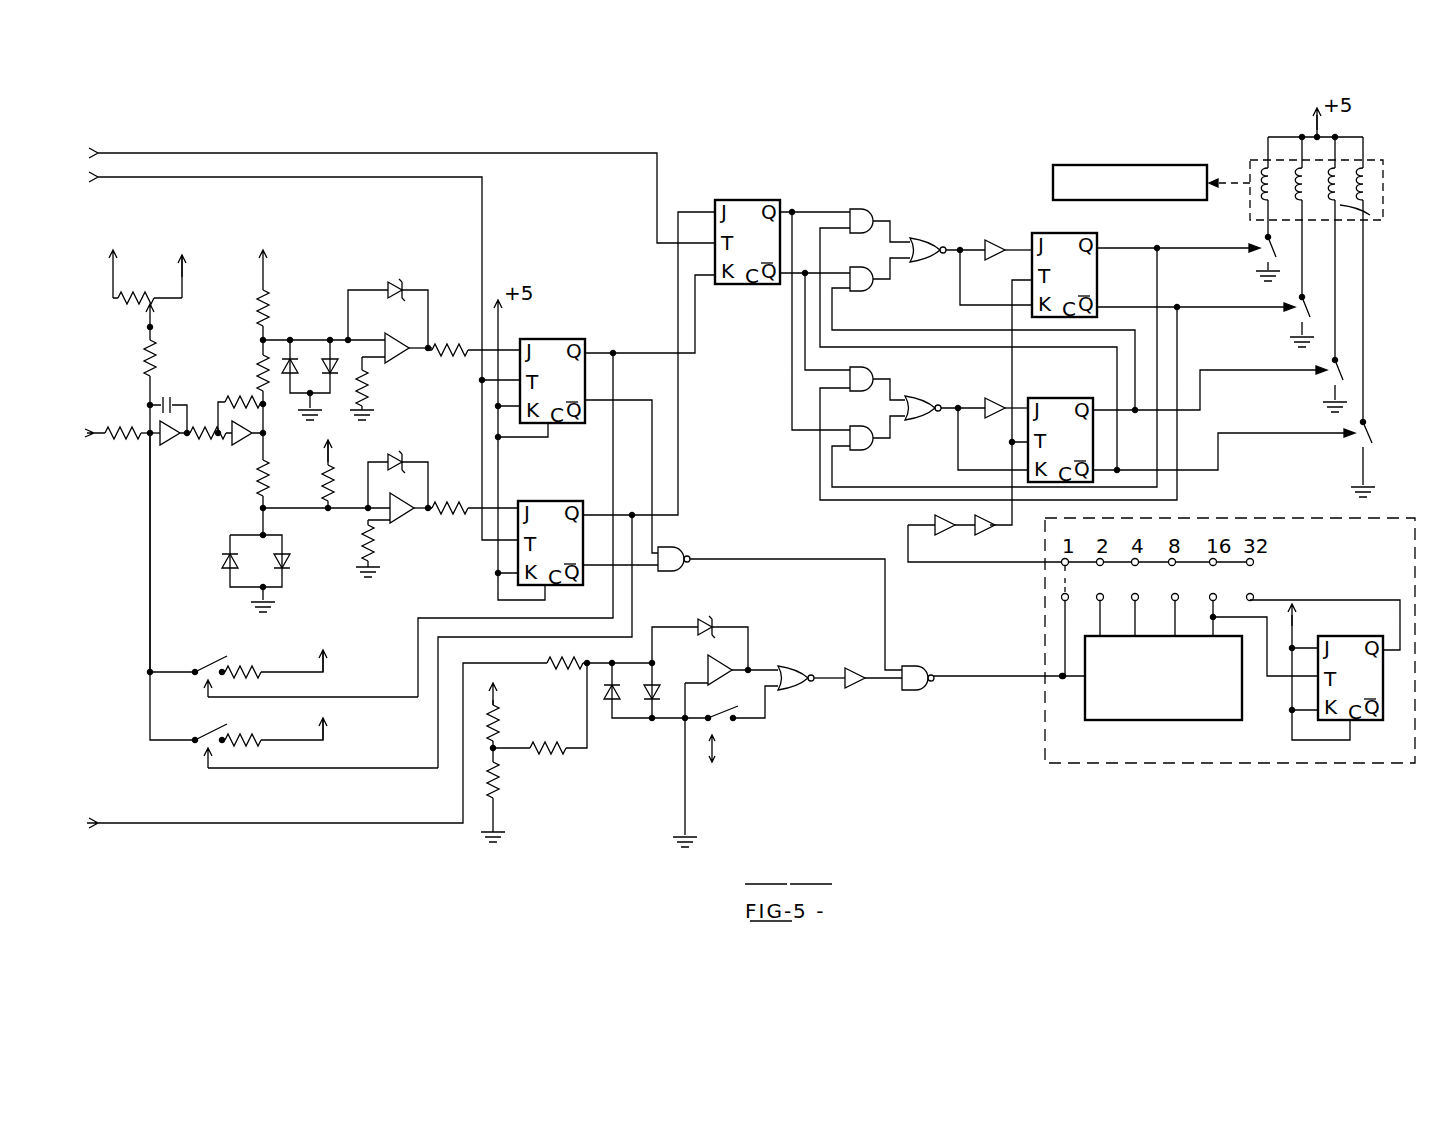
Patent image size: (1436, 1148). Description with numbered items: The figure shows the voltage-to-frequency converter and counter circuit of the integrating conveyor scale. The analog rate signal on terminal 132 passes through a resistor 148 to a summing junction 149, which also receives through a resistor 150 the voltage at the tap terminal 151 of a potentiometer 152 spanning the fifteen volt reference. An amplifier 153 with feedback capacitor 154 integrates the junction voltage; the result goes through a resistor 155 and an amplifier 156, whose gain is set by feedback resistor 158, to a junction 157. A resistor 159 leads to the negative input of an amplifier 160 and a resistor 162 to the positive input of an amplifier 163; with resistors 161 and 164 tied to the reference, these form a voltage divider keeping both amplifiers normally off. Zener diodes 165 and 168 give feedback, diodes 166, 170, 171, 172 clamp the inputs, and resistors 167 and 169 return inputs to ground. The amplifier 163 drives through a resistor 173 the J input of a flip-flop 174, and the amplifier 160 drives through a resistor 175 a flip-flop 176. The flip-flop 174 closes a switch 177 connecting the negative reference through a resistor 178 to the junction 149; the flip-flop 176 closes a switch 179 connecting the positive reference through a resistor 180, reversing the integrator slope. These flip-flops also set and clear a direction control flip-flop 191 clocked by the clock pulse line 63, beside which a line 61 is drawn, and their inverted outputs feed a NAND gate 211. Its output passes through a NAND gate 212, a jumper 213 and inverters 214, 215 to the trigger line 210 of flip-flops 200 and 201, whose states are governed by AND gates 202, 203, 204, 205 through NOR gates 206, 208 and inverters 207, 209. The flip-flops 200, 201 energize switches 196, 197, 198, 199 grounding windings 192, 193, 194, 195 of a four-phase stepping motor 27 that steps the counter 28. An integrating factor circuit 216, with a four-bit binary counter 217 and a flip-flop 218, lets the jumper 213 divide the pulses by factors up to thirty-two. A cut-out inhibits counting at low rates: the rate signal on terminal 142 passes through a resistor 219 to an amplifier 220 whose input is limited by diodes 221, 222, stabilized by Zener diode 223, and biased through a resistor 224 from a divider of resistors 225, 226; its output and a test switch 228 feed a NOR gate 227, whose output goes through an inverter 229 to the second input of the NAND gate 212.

The motor 27 is at (1378, 230).
The counter 28 is at (1140, 166).
The input line 61 is at (155, 185).
The clock pulse line 63 is at (148, 156).
The terminal 132 is at (94, 441).
The terminal 142 is at (108, 823).
The resistor 148 is at (133, 433).
The summing junction 149 is at (144, 478).
The resistor 150 is at (146, 362).
The tap terminal 151 is at (152, 328).
The potentiometer 152 is at (164, 294).
The amplifier 153 is at (164, 446).
The feedback capacitor 154 is at (182, 400).
The resistor 155 is at (205, 442).
The operational amplifier 156 is at (244, 448).
The junction 157 is at (264, 434).
The feedback resistor 158 is at (242, 397).
The resistor 159 is at (253, 372).
The operational amplifier 160 is at (397, 350).
The resistor 161 is at (260, 297).
The resistor 162 is at (256, 490).
The operational amplifier 163 is at (396, 510).
The resistor 164 is at (326, 486).
The Zener diode 165 is at (384, 288).
The diode 166 is at (332, 391).
The resistor 167 is at (364, 395).
The Zener diode 168 is at (415, 430).
The resistor 169 is at (378, 548).
The diode 170 is at (288, 395).
The diode 171 is at (222, 560).
The diode 172 is at (290, 560).
The resistor 173 is at (468, 502).
The flip-flop 174 is at (558, 482).
The resistor 175 is at (470, 344).
The flip-flop 176 is at (558, 325).
The switch 177 is at (193, 763).
The resistor 178 is at (280, 734).
The switch 179 is at (180, 687).
The resistor 180 is at (280, 666).
The flip-flop 191 is at (723, 290).
The winding 192 is at (1370, 191).
The winding 193 is at (1366, 217).
The winding 194 is at (1302, 198).
The winding 195 is at (1265, 197).
The electronic switch 196 is at (1350, 448).
The electronic switch 197 is at (1315, 384).
The electronic switch 198 is at (1283, 324).
The electronic switch 199 is at (1249, 264).
The flip-flop 200 is at (1072, 384).
The flip-flop 201 is at (1070, 220).
The AND gate 202 is at (851, 456).
The AND gate 203 is at (876, 370).
The AND gate 204 is at (866, 270).
The AND gate 205 is at (868, 212).
The NOR gate 206 is at (908, 418).
The inverter 207 is at (986, 394).
The NOR gate 208 is at (908, 268).
The inverter 209 is at (1000, 222).
The trigger line 210 is at (1015, 530).
The NAND gate 211 is at (688, 550).
The NAND gate 212 is at (918, 688).
The jumper wire 213 is at (1077, 582).
The inverter 214 is at (930, 525).
The inverter 215 is at (957, 540).
The integrating factor circuit 216 is at (1205, 773).
The four-bit binary counter 217 is at (1132, 727).
The flip-flop 218 is at (1358, 726).
The resistor 219 is at (546, 662).
The operational amplifier 220 is at (714, 680).
The diode 221 is at (601, 714).
The diode 222 is at (638, 664).
The Zener diode 223 is at (702, 622).
The resistor 224 is at (534, 760).
The resistor 225 is at (499, 721).
The resistor 226 is at (503, 792).
The NOR gate 227 is at (793, 694).
The test switch 228 is at (681, 742).
The inverter 229 is at (858, 688).